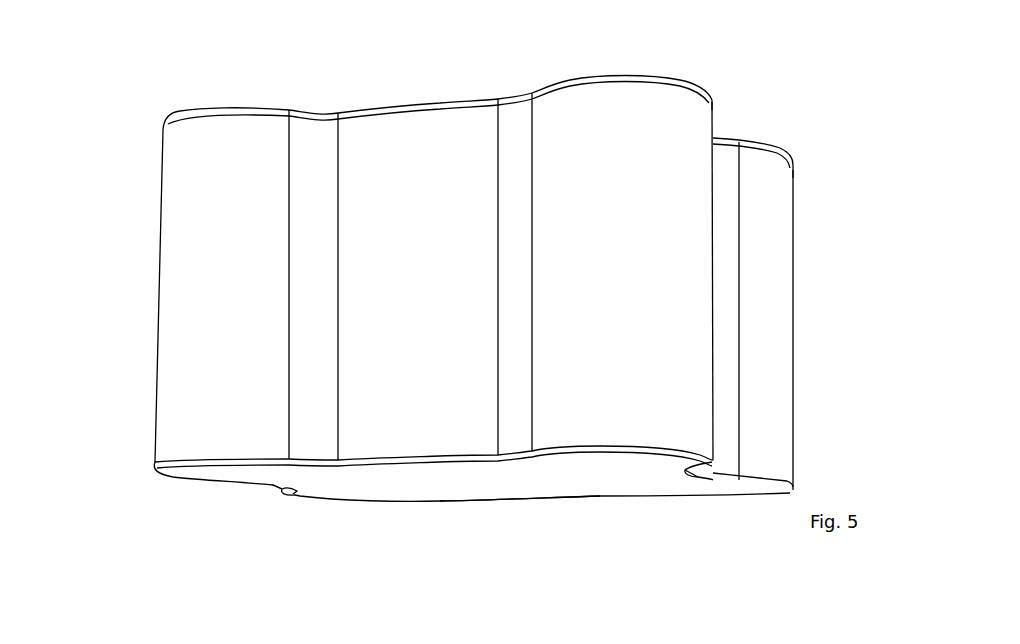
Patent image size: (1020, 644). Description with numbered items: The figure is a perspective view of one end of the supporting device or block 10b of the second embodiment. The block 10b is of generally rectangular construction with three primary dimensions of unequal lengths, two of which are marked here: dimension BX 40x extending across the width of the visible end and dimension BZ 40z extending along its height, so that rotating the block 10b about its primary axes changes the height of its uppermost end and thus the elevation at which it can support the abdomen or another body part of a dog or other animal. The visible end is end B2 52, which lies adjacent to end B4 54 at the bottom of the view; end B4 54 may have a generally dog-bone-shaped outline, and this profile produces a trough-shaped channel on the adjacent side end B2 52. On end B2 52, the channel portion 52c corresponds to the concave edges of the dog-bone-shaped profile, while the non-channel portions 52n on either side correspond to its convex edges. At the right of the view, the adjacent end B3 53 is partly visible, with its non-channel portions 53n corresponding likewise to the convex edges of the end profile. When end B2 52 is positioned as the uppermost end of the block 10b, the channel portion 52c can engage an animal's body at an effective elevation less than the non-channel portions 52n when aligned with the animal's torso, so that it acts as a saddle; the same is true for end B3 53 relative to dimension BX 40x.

The end B2 52 is at (125, 92).
The end B3 53 is at (877, 252).
The non-channel portions of end B3 53n is at (698, 112).
The non-channel portions of end B2 52n is at (186, 425).
The channel portion of end B2 52c is at (390, 398).
The end B4 54 is at (530, 478).
The dimension BX 40x is at (683, 42).
The dimension BZ 40z is at (127, 108).
The supporting device or block 10b is at (902, 380).